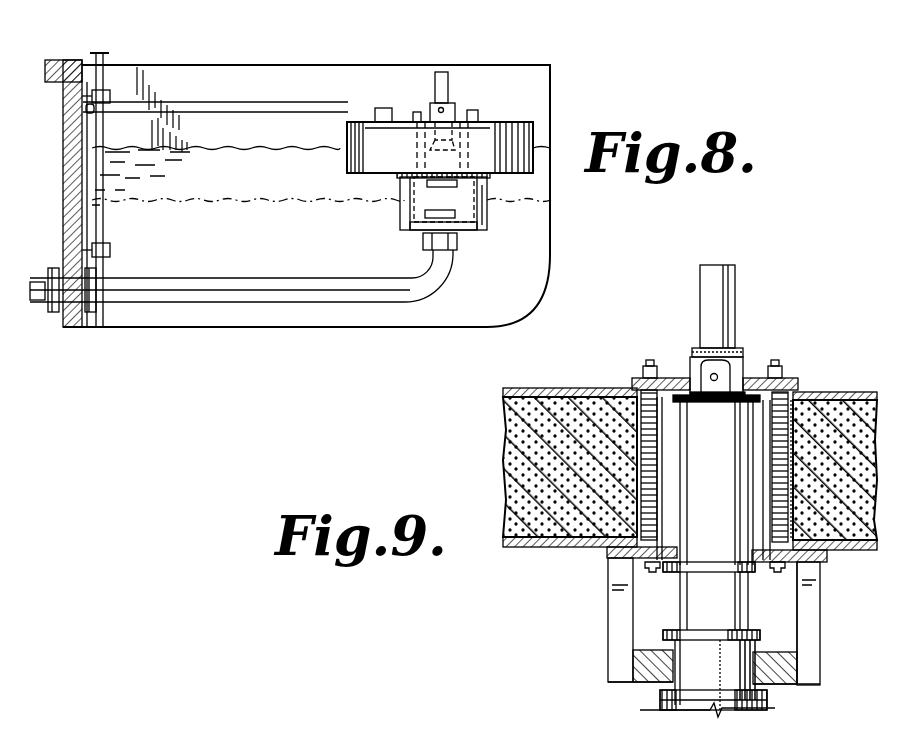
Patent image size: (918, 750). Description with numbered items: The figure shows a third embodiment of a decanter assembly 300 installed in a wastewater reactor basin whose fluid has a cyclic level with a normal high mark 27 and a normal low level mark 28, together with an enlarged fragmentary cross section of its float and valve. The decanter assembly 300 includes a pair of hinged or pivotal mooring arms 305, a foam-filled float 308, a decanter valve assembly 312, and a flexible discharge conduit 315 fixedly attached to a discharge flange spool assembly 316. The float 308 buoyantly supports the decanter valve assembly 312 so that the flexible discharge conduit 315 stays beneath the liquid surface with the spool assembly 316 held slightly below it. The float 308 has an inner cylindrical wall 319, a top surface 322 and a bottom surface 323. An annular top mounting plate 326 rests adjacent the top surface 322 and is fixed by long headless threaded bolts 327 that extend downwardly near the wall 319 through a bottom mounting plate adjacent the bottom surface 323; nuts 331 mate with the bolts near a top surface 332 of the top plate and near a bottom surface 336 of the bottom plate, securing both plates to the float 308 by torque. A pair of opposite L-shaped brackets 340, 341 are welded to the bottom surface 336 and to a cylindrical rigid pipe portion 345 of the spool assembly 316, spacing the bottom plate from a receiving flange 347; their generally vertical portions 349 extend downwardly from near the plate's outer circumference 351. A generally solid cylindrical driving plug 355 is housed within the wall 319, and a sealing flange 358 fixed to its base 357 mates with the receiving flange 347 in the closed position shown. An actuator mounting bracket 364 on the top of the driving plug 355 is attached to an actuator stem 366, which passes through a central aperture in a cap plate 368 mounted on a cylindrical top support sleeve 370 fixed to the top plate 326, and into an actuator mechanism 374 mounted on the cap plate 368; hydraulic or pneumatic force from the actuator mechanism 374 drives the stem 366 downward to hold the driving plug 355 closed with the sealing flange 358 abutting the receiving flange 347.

In FIG. 8, the decanter assembly 300 is at (284, 66).
In FIG. 8, the mooring arms 305 is at (235, 105).
In FIG. 8, the normal high mark 27 is at (240, 147).
In FIG. 8, the normal low level mark 28 is at (253, 200).
In FIG. 8, the flexible discharge conduit 315 is at (258, 281).
In FIG. 9, the flexible discharge conduit 315 is at (663, 703).
In FIG. 8, the discharge flange spool assembly 316 is at (458, 241).
In FIG. 9, the discharge flange spool assembly 316 is at (778, 684).
In FIG. 8, the float 308 is at (538, 124).
In FIG. 8, the decanter valve assembly 312 is at (468, 108).
In FIG. 9, the decanter valve assembly 312 is at (786, 306).
In FIG. 8, the actuator mechanism 374 is at (443, 72).
In FIG. 9, the actuator mechanism 374 is at (735, 275).
In FIG. 8, the driving plug 355 is at (417, 190).
In FIG. 9, the driving plug 355 is at (683, 500).
In FIG. 8, the L-shaped bracket 340 is at (402, 213).
In FIG. 9, the L-shaped bracket 340 is at (612, 600).
In FIG. 9, the inner cylindrical wall 319 is at (633, 467).
In FIG. 9, the top surface 322 is at (553, 388).
In FIG. 9, the bottom surface 323 is at (530, 548).
In FIG. 9, the top mounting plate 326 is at (636, 383).
In FIG. 9, the threaded bolts 327 is at (637, 433).
In FIG. 9, the nuts 331 is at (787, 375).
In FIG. 9, the top surface 332 is at (757, 371).
In FIG. 9, the bottom surface 336 is at (820, 567).
In FIG. 9, the L-shaped bracket 341 is at (815, 603).
In FIG. 9, the rigid pipe portion 345 is at (760, 650).
In FIG. 9, the receiving flange 347 is at (695, 632).
In FIG. 9, the vertical portions 349 is at (612, 636).
In FIG. 9, the outer circumference 351 is at (605, 560).
In FIG. 9, the base 357 is at (712, 548).
In FIG. 9, the sealing flange 358 is at (705, 572).
In FIG. 9, the actuator mounting bracket 364 is at (717, 397).
In FIG. 9, the actuator stem 366 is at (690, 368).
In FIG. 9, the cap plate 368 is at (737, 357).
In FIG. 9, the top support sleeve 370 is at (693, 357).